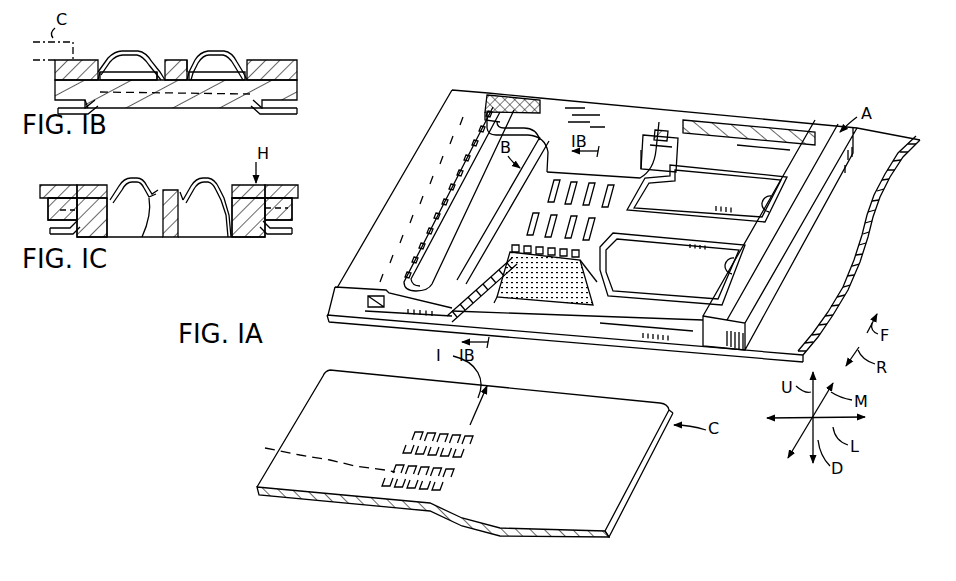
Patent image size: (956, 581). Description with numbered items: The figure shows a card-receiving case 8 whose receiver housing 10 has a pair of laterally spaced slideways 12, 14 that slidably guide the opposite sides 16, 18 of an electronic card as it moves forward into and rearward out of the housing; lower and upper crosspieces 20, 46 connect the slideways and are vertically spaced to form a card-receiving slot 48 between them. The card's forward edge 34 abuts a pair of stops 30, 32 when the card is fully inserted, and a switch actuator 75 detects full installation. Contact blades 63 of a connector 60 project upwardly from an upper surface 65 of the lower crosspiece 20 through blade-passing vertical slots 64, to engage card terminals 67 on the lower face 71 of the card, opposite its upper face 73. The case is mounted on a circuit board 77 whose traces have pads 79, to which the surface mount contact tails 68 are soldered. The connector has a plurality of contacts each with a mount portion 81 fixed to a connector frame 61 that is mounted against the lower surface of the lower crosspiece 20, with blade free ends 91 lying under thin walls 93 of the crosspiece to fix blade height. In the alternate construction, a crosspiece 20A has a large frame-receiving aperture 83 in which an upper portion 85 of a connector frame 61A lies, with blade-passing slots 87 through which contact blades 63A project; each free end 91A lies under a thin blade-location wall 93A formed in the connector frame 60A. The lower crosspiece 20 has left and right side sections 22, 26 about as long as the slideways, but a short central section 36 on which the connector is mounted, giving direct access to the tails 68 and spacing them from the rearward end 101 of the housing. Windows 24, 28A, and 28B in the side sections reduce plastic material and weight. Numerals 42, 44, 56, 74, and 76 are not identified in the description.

In FIG. 1A, the card-receiving case 8 is at (352, 240).
In FIG. 1A, the receiver housing 10 is at (345, 268).
In FIG. 1B, the receiver housing 10 is at (302, 46).
In FIG. 1A, the slideway 12 is at (369, 301).
In FIG. 1A, the slideway 14 is at (710, 348).
In FIG. 1A, the card side 16 is at (316, 400).
In FIG. 1A, the card side 18 is at (655, 438).
In FIG. 1A, the lower crosspiece 20 is at (410, 322).
In FIG. 1B, the lower crosspiece 20 is at (300, 63).
In FIG. 1C, the crosspiece 20A is at (300, 184).
In FIG. 1A, the left side section 22 is at (500, 97).
In FIG. 1A, the window 24 is at (540, 148).
In FIG. 1B, the window 24 is at (193, 62).
In FIG. 1A, the right side section 26 is at (748, 123).
In FIG. 1A, the window 28A is at (767, 205).
In FIG. 1A, the window 28B is at (733, 267).
In FIG. 1A, the stop 30 is at (508, 100).
In FIG. 1A, the stop 32 is at (767, 130).
In FIG. 1A, the forward edge 34 is at (612, 398).
In FIG. 1A, the central section 36 is at (602, 152).
In FIG. 1A, the card slot 42 is at (470, 307).
In FIG. 1A, the post 44 is at (660, 124).
In FIG. 1A, the upper crosspiece 46 is at (411, 284).
In FIG. 1A, the card-receiving slot 48 is at (700, 347).
In FIG. 1A, the recess 56 is at (636, 164).
In FIG. 1A, the connector 60 is at (563, 275).
In FIG. 1B, the connector 60 is at (298, 88).
In FIG. 1C, the connector frame 60A is at (306, 195).
In FIG. 1A, the connector frame 61 is at (568, 273).
In FIG. 1B, the connector frame 61 is at (177, 109).
In FIG. 1C, the connector frame 61A is at (170, 240).
In FIG. 1A, the contact blade 63 is at (547, 192).
In FIG. 1B, the contact blade 63 is at (218, 52).
In FIG. 1C, the contact blade 63A is at (211, 181).
In FIG. 1A, the blade-passing vertical slot 64 is at (530, 224).
In FIG. 1B, the blade-passing vertical slot 64 is at (157, 60).
In FIG. 1A, the upper surface 65 is at (520, 240).
In FIG. 1A, the card terminal 67 is at (265, 448).
In FIG. 1A, the contact tail 68 is at (546, 273).
In FIG. 1B, the contact tail 68 is at (294, 110).
In FIG. 1A, the lower face 71 is at (611, 523).
In FIG. 1A, the upper face 73 is at (590, 477).
In FIG. 1A, the boss 74 is at (663, 128).
In FIG. 1A, the switch actuator 75 is at (662, 146).
In FIG. 1A, the wall 76 is at (668, 135).
In FIG. 1A, the circuit board 77 is at (893, 132).
In FIG. 1B, the circuit board 77 is at (248, 55).
In FIG. 1A, the pad 79 is at (500, 300).
In FIG. 1B, the mount portion 81 is at (147, 108).
In FIG. 1C, the frame-receiving aperture 83 is at (85, 185).
In FIG. 1C, the upper portion 85 is at (278, 185).
In FIG. 1C, the blade-passing slot 87 is at (126, 180).
In FIG. 1B, the blade free end 91 is at (104, 62).
In FIG. 1C, the free end 91A is at (154, 200).
In FIG. 1B, the thin wall 93 is at (110, 57).
In FIG. 1C, the blade-location wall 93A is at (172, 181).
In FIG. 1A, the rearward end 101 is at (333, 296).